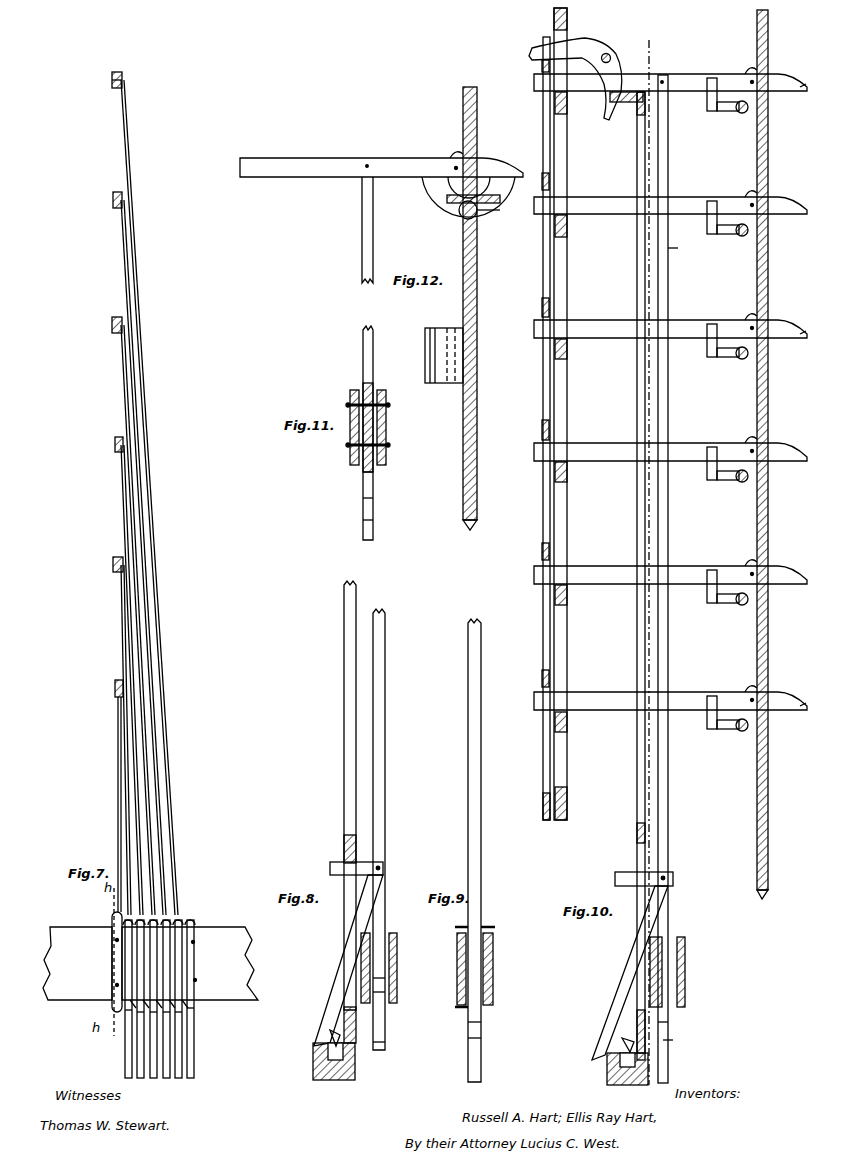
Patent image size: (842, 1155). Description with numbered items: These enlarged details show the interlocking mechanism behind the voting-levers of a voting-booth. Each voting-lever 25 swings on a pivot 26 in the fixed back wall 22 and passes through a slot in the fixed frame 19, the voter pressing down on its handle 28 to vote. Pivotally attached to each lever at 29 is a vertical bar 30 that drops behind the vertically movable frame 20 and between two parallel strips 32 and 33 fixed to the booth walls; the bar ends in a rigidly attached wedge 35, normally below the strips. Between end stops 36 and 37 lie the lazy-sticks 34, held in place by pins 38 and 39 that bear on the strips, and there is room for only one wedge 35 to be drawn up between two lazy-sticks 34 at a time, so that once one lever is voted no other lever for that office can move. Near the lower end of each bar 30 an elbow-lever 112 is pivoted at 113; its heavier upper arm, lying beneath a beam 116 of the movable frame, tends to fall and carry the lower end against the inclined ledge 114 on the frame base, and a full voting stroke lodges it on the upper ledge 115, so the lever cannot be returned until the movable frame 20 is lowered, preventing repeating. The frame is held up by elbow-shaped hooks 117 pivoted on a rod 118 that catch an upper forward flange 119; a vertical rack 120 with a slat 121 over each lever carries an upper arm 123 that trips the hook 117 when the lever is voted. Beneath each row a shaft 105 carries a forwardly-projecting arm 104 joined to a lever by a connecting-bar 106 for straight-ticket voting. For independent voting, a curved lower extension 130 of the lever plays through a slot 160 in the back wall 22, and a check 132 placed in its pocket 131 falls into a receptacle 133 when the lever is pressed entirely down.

In FIG. 10, the fixed frame 19 is at (568, 236).
In FIG. 8, the movable frame 20 is at (344, 736).
In FIG. 10, the movable frame 20 is at (636, 660).
In FIG. 10, the back wall 22 is at (769, 150).
In FIG. 12, the back wall 22 is at (478, 262).
In FIG. 7, the voting-lever 25 is at (110, 205).
In FIG. 10, the voting-lever 25 is at (590, 320).
In FIG. 12, the voting-lever 25 is at (381, 167).
In FIG. 10, the pivot 26 is at (748, 80).
In FIG. 12, the pivot 26 is at (452, 158).
In FIG. 10, the handle 28 is at (802, 74).
In FIG. 12, the handle 28 is at (510, 170).
In FIG. 7, the pivotal attachment 29 is at (124, 78).
In FIG. 10, the pivotal attachment 29 is at (664, 75).
In FIG. 7, the vertical bar 30 is at (142, 550).
In FIG. 8, the vertical bar 30 is at (386, 704).
In FIG. 9, the vertical bar 30 is at (482, 690).
In FIG. 10, the vertical bar 30 is at (682, 249).
In FIG. 12, the vertical bar 30 is at (374, 232).
In FIG. 11, the vertical bar 30 is at (374, 350).
In FIG. 7, the strip 32 is at (150, 963).
In FIG. 8, the strip 32 is at (398, 950).
In FIG. 9, the strip 32 is at (494, 968).
In FIG. 10, the strip 32 is at (686, 955).
In FIG. 11, the strip 32 is at (349, 435).
In FIG. 7, the strip 33 is at (204, 958).
In FIG. 8, the strip 33 is at (360, 948).
In FIG. 9, the strip 33 is at (456, 990).
In FIG. 10, the strip 33 is at (649, 955).
In FIG. 11, the strip 33 is at (387, 428).
In FIG. 7, the lazy-stick 34 is at (172, 922).
In FIG. 9, the lazy-stick 34 is at (494, 925).
In FIG. 7, the wedge 35 is at (125, 1060).
In FIG. 8, the wedge 35 is at (386, 1040).
In FIG. 9, the wedge 35 is at (482, 1046).
In FIG. 10, the wedge 35 is at (669, 1045).
In FIG. 11, the wedge 35 is at (374, 514).
In FIG. 7, the end stop 36 is at (110, 918).
In FIG. 11, the end stop 36 is at (374, 383).
In FIG. 7, the end stop 37 is at (195, 922).
In FIG. 7, the pin 38 is at (152, 920).
In FIG. 9, the pin 38 is at (456, 925).
In FIG. 7, the pin 39 is at (192, 1010).
In FIG. 9, the pin 39 is at (456, 1008).
In FIG. 10, the forwardly-projecting arm 104 is at (730, 96).
In FIG. 10, the shaft 105 is at (738, 113).
In FIG. 10, the connecting-bar 106 is at (706, 100).
In FIG. 8, the elbow-lever 112 is at (330, 868).
In FIG. 10, the elbow-lever 112 is at (615, 878).
In FIG. 8, the pivot 113 is at (381, 866).
In FIG. 10, the pivot 113 is at (666, 876).
In FIG. 8, the inclined ledge 114 is at (313, 1065).
In FIG. 10, the inclined ledge 114 is at (607, 1072).
In FIG. 8, the upper ledge 115 is at (330, 1036).
In FIG. 10, the upper ledge 115 is at (622, 1044).
In FIG. 8, the beam 116 is at (344, 842).
In FIG. 10, the beam 116 is at (636, 832).
In FIG. 10, the pivoted hook 117 is at (592, 42).
In FIG. 10, the rod 118 is at (611, 56).
In FIG. 10, the upper forward flange 119 is at (628, 103).
In FIG. 10, the vertical rack 120 is at (543, 646).
In FIG. 10, the slat 121 is at (541, 305).
In FIG. 10, the upper arm 123 is at (543, 68).
In FIG. 12, the curved lower extension 130 is at (430, 200).
In FIG. 12, the pocket 131 is at (500, 199).
In FIG. 12, the check 132 is at (459, 213).
In FIG. 12, the receptacle 133 is at (438, 328).
In FIG. 12, the slot 160 is at (489, 212).